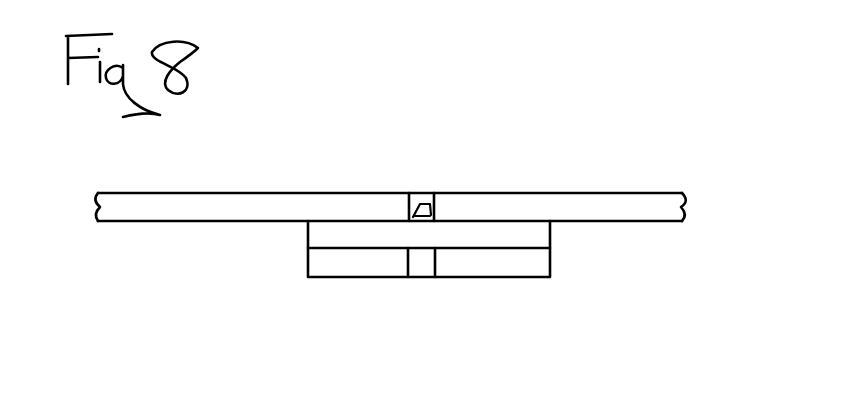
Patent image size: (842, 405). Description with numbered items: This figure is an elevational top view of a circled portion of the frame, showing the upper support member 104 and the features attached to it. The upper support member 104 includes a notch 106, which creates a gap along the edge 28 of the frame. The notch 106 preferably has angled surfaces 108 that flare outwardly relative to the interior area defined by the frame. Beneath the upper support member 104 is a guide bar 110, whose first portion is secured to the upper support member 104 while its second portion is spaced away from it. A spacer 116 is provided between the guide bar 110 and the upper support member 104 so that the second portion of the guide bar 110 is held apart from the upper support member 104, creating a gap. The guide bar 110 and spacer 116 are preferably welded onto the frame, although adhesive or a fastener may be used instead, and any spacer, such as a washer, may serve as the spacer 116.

The edge 28 is at (647, 203).
The upper support member 104 is at (165, 222).
The notch 106 is at (428, 186).
The angled surfaces 108 is at (436, 216).
The guide bar 110 is at (505, 278).
The spacer 116 is at (533, 233).